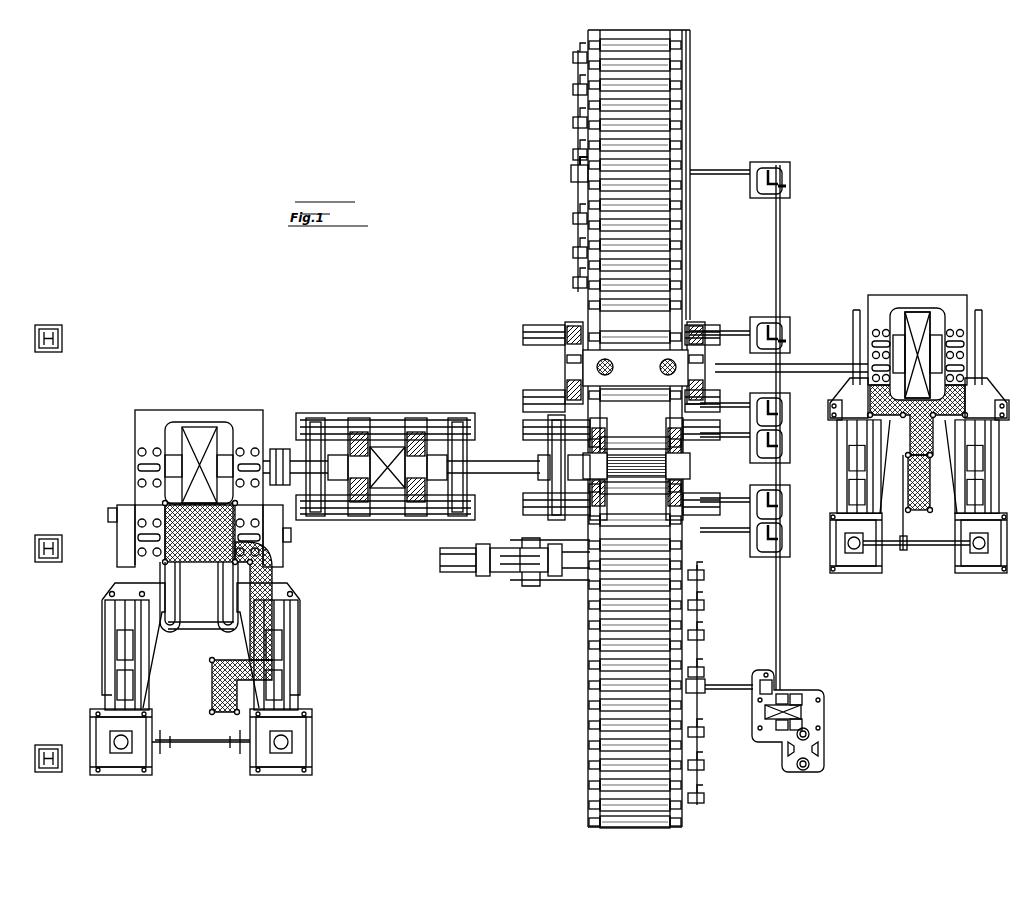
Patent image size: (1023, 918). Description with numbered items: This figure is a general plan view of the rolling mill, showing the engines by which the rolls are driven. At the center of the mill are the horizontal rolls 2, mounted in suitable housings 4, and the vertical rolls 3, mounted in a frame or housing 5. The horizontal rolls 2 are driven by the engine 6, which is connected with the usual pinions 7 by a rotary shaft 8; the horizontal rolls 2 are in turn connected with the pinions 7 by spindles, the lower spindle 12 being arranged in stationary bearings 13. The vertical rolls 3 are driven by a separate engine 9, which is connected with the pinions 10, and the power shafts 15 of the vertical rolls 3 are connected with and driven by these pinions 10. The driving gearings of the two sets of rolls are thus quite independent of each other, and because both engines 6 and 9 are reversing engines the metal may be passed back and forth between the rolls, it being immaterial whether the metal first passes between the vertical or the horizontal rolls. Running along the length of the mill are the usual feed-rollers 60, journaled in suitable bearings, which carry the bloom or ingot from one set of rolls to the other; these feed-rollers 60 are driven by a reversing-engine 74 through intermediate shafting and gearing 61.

The horizontal rolls 2 is at (636, 466).
The vertical rolls 3 is at (611, 365).
The housings 4 is at (590, 442).
The frame or housing 5 is at (558, 375).
The engine 6 is at (201, 592).
The pinions 7 is at (382, 466).
The rotary shaft 8 is at (282, 467).
The engine 9 is at (918, 434).
The pinions 10 is at (917, 354).
The lower spindle 12 is at (507, 461).
The stationary bearings 13 is at (484, 484).
The power shafts 15 is at (805, 366).
The feed-rollers 60 is at (639, 429).
The intermediate shafting and gearing 61 is at (682, 414).
The reversing-engine 74 is at (788, 721).